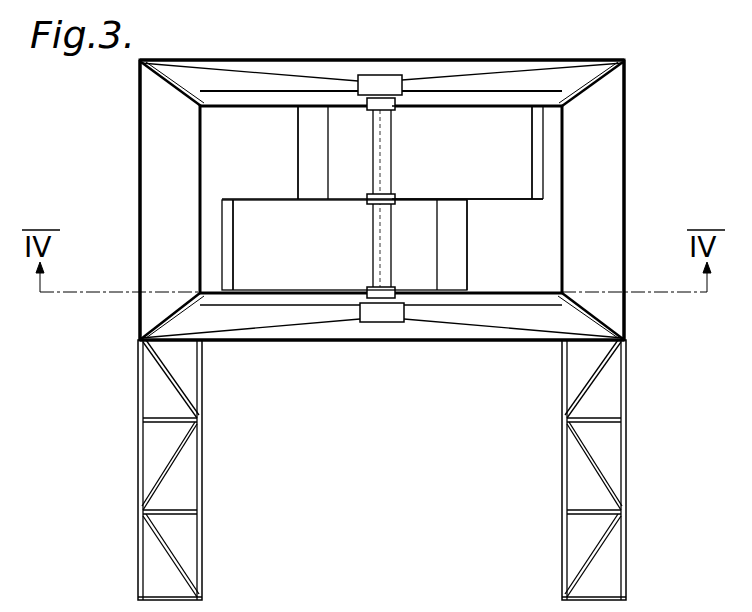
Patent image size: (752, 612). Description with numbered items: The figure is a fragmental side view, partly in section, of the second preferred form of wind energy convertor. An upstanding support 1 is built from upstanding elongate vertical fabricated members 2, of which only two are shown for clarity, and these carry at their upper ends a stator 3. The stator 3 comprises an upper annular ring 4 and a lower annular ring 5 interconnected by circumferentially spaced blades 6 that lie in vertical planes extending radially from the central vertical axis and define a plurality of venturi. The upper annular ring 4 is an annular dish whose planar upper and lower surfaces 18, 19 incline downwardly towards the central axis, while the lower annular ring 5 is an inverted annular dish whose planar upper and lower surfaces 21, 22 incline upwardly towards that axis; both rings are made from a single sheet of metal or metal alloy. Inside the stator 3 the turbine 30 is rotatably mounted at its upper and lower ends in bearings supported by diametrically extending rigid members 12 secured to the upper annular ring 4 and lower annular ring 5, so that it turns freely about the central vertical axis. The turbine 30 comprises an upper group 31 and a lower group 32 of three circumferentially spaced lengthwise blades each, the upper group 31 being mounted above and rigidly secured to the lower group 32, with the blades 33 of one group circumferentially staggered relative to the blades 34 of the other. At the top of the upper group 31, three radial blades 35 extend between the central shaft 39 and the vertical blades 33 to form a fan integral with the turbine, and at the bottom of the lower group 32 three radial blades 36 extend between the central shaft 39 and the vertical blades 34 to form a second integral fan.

The upstanding support 1 is at (361, 470).
The vertical fabricated member 2 is at (138, 440).
The stator 3 is at (138, 256).
The upper annular ring 4 is at (322, 58).
The lower annular ring 5 is at (502, 343).
The stator blade 6 is at (150, 164).
The diametrically extending rigid member 12 is at (507, 82).
The upper surface of upper annular ring 18 is at (443, 66).
The lower surface of upper annular ring 19 is at (157, 72).
The upper surface of lower annular ring 21 is at (172, 315).
The lower surface of lower annular ring 22 is at (418, 331).
The turbine 30 is at (508, 199).
The upper group of blades 31 is at (543, 137).
The lower group of blades 32 is at (221, 220).
The vertical blade of upper group 33 is at (298, 156).
The vertical blade of lower group 34 is at (233, 265).
The upper fan blade 35 is at (463, 111).
The lower fan blade 36 is at (320, 288).
The central shaft 39 is at (392, 163).